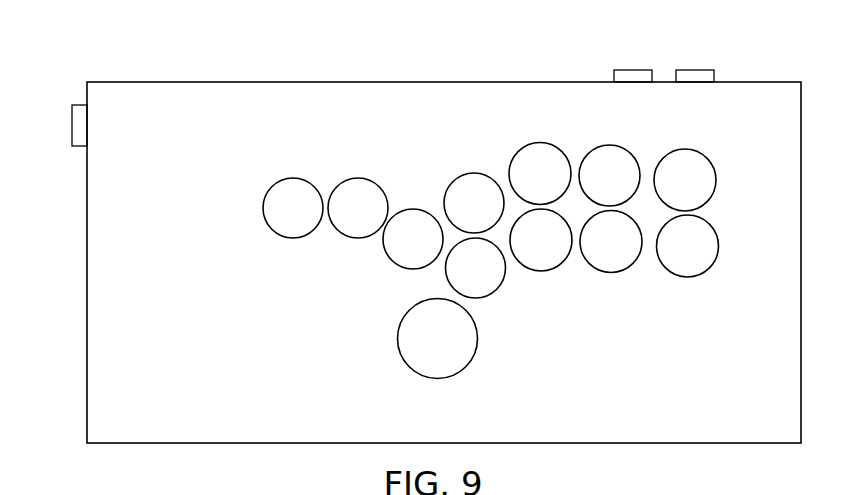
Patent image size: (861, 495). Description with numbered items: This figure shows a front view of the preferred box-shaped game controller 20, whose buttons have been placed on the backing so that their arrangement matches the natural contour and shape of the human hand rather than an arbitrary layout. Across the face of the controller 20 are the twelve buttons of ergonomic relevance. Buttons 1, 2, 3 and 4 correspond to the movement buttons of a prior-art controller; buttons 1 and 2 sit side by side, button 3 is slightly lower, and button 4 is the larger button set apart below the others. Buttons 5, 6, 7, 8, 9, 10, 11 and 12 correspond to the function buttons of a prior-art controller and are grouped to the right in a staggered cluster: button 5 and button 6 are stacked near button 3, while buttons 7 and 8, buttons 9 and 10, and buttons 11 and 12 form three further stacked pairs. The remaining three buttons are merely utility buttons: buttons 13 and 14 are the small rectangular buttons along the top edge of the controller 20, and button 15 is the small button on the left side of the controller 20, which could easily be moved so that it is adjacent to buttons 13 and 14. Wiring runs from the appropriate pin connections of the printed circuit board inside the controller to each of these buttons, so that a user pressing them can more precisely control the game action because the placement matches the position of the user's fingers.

The controller 20 is at (178, 149).
The button 15 is at (72, 108).
The button 13 is at (613, 72).
The button 14 is at (688, 70).
The button 1 is at (286, 219).
The button 2 is at (351, 219).
The button 3 is at (406, 250).
The button 4 is at (430, 349).
The button 5 is at (467, 214).
The button 6 is at (468, 279).
The button 7 is at (533, 184).
The button 8 is at (534, 251).
The button 9 is at (602, 186).
The button 10 is at (598, 252).
The button 11 is at (672, 191).
The button 12 is at (674, 257).